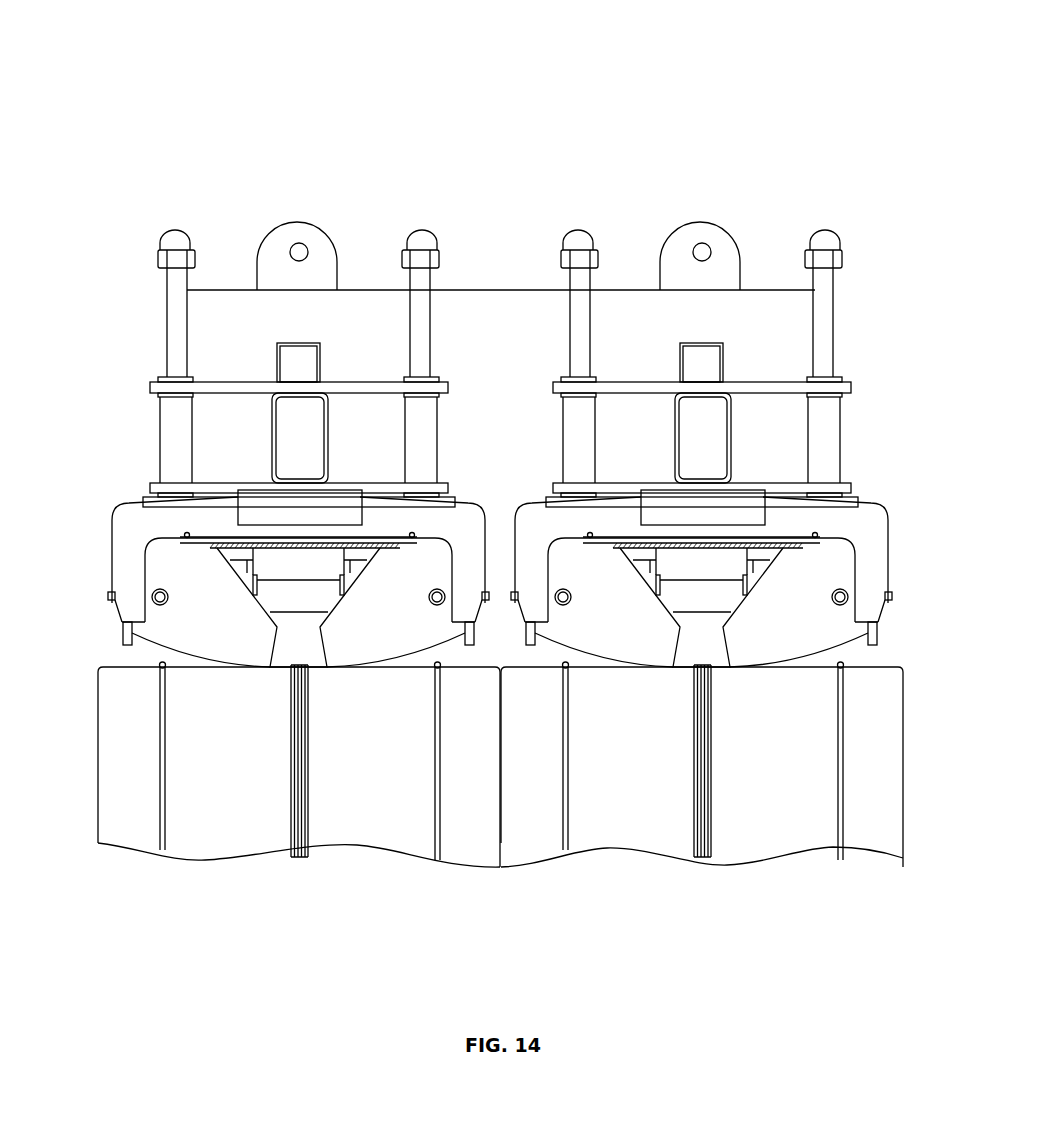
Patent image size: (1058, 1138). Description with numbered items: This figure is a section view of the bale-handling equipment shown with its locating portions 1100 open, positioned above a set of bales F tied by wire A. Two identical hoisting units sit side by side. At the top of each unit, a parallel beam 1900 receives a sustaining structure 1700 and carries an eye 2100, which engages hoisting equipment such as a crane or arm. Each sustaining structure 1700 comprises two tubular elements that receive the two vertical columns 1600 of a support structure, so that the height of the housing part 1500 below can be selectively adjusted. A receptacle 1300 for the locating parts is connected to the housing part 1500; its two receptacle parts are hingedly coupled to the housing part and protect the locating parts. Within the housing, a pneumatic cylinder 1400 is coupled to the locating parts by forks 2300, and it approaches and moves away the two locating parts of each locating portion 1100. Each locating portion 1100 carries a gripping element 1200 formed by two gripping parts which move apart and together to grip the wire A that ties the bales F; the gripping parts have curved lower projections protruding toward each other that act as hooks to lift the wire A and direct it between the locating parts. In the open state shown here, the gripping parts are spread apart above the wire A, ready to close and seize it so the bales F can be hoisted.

The locating portion 1100 is at (237, 578).
The gripping element 1200 is at (258, 690).
The receptacle 1300 is at (156, 631).
The pneumatic cylinder 1400 is at (268, 540).
The housing part 1500 is at (110, 550).
The vertical column 1600 is at (173, 288).
The sustaining structure 1700 is at (173, 420).
The parallel beam 1900 is at (297, 425).
The eye 2100 is at (290, 218).
The fork 2300 is at (815, 535).
The wire A is at (709, 753).
The bale F is at (791, 862).